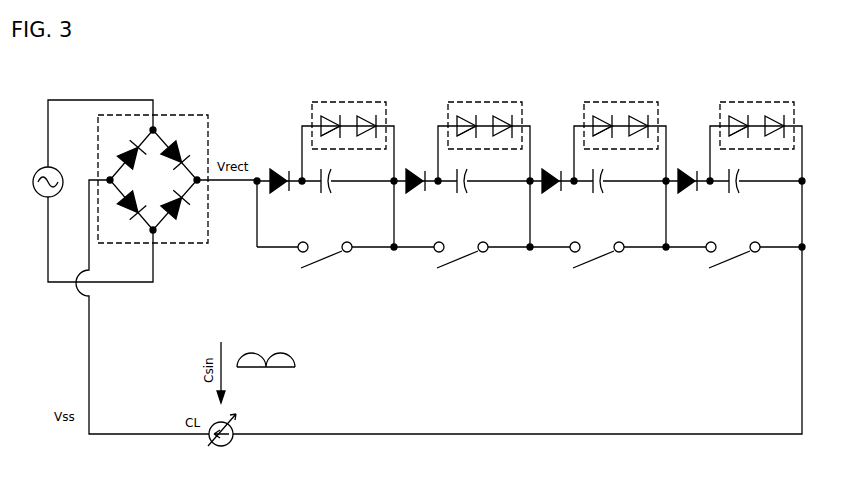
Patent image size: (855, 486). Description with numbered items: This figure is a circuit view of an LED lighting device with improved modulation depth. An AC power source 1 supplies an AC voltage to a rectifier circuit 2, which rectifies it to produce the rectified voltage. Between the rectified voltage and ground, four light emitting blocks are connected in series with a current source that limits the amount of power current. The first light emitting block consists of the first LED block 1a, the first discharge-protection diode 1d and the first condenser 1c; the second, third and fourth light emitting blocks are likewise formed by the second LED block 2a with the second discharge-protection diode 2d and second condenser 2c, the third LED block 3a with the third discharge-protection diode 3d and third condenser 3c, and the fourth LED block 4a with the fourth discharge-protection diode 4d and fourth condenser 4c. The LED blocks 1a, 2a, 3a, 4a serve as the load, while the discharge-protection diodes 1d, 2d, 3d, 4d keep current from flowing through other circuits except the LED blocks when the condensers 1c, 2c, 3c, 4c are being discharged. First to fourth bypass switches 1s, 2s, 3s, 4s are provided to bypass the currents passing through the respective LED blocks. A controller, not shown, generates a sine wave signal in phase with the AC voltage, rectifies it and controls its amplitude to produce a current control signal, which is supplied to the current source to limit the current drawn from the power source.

The AC power source 1 is at (58, 167).
The rectifier circuit 2 is at (193, 261).
The first discharge-protection diode 1d is at (279, 193).
The first condenser 1c is at (348, 189).
The first LED block 1a is at (349, 136).
The first bypass switch 1s is at (325, 262).
The second discharge-protection diode 2d is at (416, 193).
The second condenser 2c is at (484, 189).
The second LED block 2a is at (485, 136).
The second bypass switch 2s is at (462, 262).
The third discharge-protection diode 3d is at (552, 193).
The third condenser 3c is at (620, 189).
The third LED block 3a is at (621, 136).
The third bypass switch 3s is at (598, 262).
The fourth discharge-protection diode 4d is at (688, 193).
The fourth condenser 4c is at (756, 189).
The fourth LED block 4a is at (757, 136).
The fourth bypass switch 4s is at (734, 262).